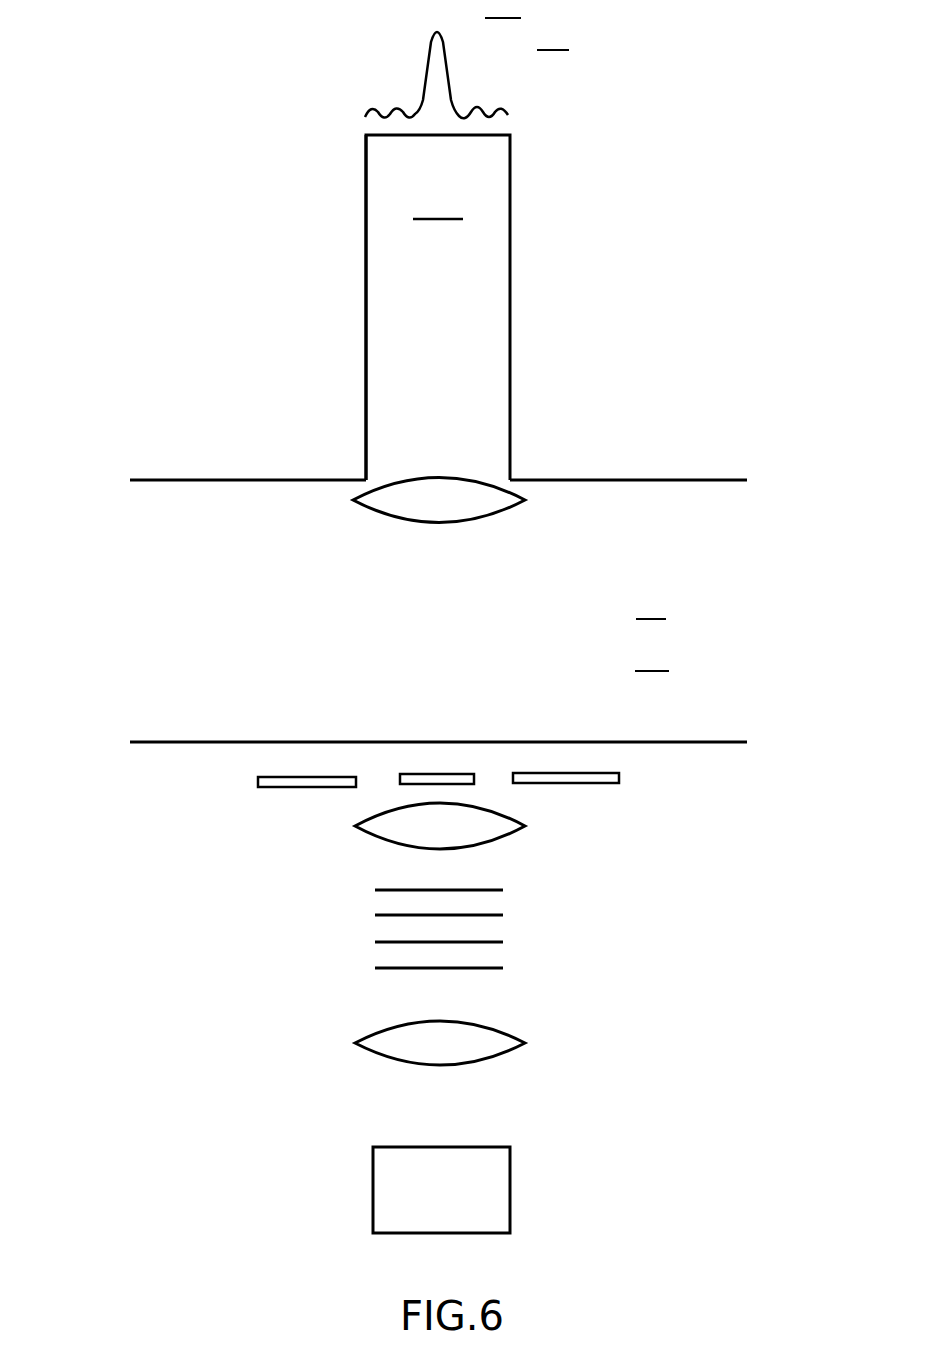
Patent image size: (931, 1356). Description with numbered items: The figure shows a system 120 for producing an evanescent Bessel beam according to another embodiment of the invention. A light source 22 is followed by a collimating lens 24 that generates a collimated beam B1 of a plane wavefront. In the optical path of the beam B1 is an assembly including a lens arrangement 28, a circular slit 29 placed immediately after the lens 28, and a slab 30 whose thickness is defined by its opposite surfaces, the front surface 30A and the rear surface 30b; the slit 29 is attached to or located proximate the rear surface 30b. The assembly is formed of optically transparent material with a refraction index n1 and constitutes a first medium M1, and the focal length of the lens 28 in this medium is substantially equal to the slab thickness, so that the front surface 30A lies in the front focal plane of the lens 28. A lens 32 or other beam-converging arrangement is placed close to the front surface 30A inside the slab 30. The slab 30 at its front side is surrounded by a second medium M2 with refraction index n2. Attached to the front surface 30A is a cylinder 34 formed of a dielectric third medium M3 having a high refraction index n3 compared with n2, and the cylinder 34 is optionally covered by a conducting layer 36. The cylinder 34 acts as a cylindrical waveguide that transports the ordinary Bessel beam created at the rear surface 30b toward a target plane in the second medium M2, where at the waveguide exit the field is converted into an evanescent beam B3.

The system 120 is at (632, 78).
The light source 22 is at (373, 1192).
The collimating lens 24 is at (387, 1033).
The collimated beam B1 is at (380, 932).
The lens arrangement 28 is at (502, 838).
The circular slit 29 is at (320, 777).
The slab 30 is at (480, 592).
The front surface 30A is at (589, 478).
The rear surface 30b is at (665, 743).
The lens 32 is at (420, 486).
The cylinder 34 is at (365, 307).
The conducting layer 36 is at (364, 213).
The evanescent beam B3 is at (430, 44).
The first medium M1 is at (654, 658).
The second medium M2 is at (504, 10).
The third medium M3 is at (440, 204).
The refraction index of the first medium n1 is at (652, 605).
The refraction index of the second medium n2 is at (553, 36).
The refraction index of the third medium n3 is at (441, 263).